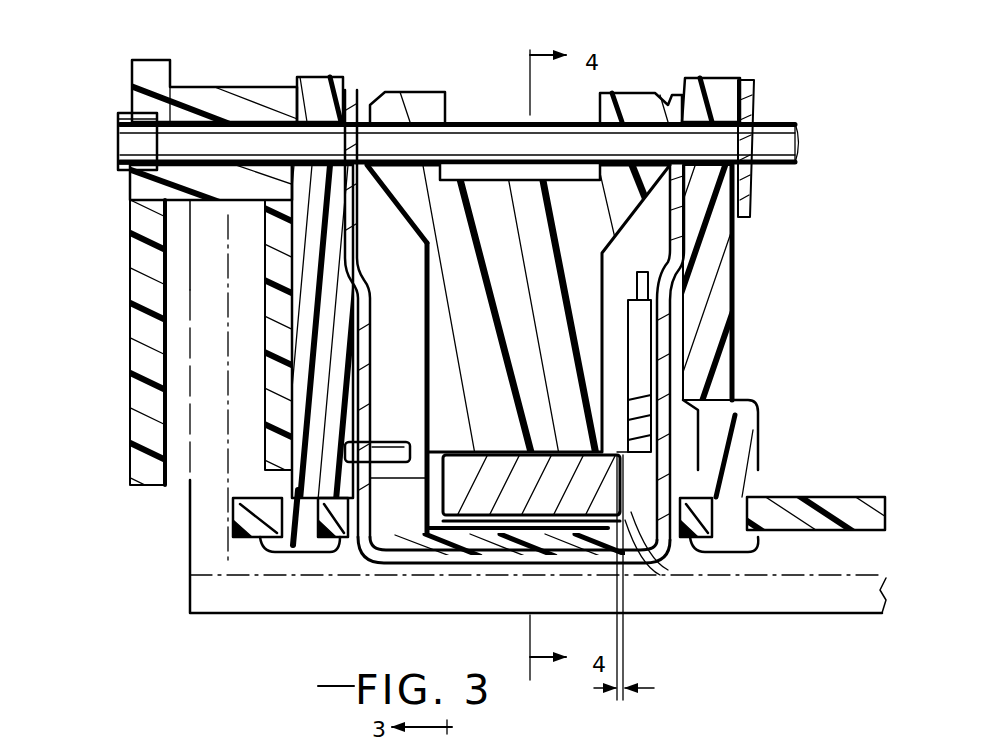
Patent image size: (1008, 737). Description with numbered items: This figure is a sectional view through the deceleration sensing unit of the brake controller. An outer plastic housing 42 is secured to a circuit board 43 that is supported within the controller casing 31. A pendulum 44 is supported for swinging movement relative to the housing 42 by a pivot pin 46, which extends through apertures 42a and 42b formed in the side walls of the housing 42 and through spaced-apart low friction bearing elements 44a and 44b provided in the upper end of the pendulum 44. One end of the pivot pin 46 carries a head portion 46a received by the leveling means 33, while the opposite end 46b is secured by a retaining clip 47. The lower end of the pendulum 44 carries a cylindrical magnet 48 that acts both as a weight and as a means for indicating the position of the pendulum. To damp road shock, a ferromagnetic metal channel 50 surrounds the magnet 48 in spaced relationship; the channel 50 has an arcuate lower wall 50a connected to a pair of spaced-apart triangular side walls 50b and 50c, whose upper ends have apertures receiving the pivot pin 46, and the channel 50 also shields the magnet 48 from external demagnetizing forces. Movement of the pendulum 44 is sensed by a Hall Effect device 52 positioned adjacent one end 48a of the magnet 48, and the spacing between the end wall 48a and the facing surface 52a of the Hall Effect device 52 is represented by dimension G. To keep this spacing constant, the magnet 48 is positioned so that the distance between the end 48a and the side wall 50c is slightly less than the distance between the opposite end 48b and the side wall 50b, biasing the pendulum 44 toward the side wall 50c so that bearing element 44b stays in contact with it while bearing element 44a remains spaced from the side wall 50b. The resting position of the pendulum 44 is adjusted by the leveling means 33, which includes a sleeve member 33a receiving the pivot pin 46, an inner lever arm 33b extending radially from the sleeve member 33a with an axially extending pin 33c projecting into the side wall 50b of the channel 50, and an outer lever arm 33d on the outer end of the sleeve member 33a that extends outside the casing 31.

The controller casing 31 is at (190, 548).
The leveling means 33 is at (209, 86).
The sleeve member 33a is at (252, 95).
The inner lever arm 33b is at (270, 378).
The axially extending pin 33c is at (390, 442).
The outer lever arm 33d is at (142, 425).
The outer plastic housing 42 is at (745, 283).
The aperture 42a is at (322, 118).
The aperture 42b is at (705, 130).
The circuit board 43 is at (800, 498).
The pendulum 44 is at (609, 372).
The bearing element 44a is at (418, 100).
The bearing element 44b is at (638, 100).
The pivot pin 46 is at (465, 121).
The head portion 46a is at (118, 152).
The opposite end 46b is at (780, 147).
The retaining clip 47 is at (758, 106).
The magnet 48 is at (523, 507).
The end of magnet 48a is at (622, 462).
The opposite end of magnet 48b is at (445, 496).
The metal channel 50 is at (606, 570).
The arcuate lower wall 50a is at (410, 562).
The side wall 50b is at (368, 308).
The side wall 50c is at (660, 334).
The Hall Effect device 52 is at (650, 562).
The facing surface 52a is at (633, 548).
The spacing G is at (622, 692).